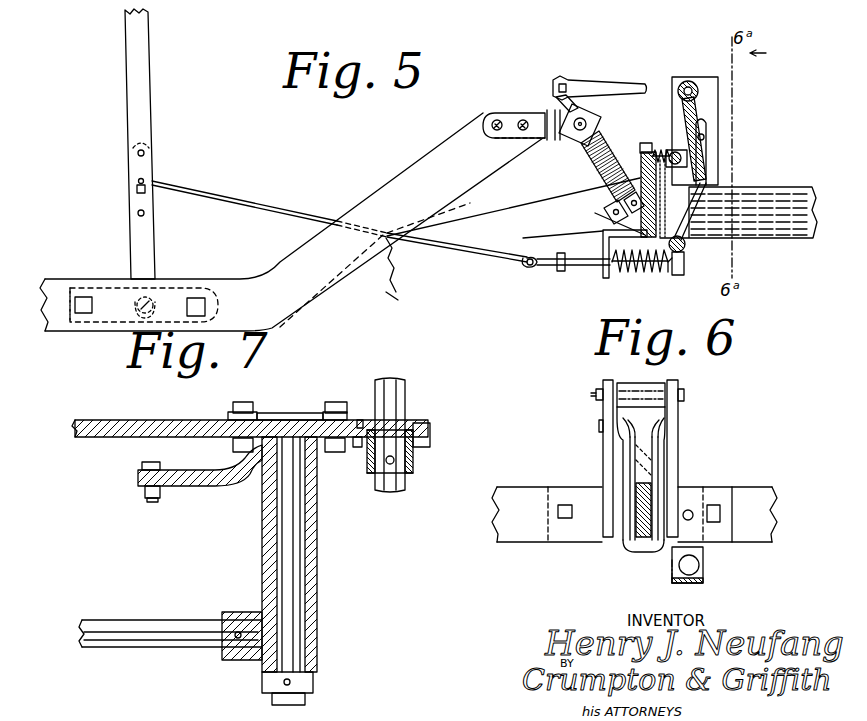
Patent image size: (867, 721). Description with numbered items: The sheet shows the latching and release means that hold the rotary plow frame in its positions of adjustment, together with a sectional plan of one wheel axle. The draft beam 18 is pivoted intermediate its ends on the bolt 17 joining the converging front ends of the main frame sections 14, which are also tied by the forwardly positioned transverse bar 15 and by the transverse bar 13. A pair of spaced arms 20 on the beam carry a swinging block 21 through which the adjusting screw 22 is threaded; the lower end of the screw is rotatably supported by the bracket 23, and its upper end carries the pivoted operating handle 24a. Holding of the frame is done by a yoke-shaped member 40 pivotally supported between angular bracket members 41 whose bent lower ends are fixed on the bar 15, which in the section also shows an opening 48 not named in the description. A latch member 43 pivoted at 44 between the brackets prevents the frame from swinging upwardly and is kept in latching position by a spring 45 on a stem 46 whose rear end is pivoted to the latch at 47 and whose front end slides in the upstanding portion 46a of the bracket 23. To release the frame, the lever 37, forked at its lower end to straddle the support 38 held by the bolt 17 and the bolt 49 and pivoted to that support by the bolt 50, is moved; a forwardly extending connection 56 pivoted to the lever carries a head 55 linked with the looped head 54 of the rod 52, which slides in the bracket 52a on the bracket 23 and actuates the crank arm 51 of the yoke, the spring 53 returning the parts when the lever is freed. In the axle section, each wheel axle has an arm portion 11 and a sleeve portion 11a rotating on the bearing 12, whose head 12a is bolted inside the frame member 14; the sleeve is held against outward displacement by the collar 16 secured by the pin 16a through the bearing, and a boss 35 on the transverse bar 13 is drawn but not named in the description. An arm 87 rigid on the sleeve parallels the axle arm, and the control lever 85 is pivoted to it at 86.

In FIG. 5, the lever 37 is at (152, 105).
In FIG. 5, the draft beam 18 is at (372, 166).
In FIG. 5, the bolt 49 is at (75, 297).
In FIG. 5, the support 38 is at (103, 278).
In FIG. 6, the support 38 is at (640, 533).
In FIG. 5, the bolt 50 is at (158, 292).
In FIG. 5, the bolt 17 is at (205, 300).
In FIG. 5, the forwardly extending connection 56 is at (250, 200).
In FIG. 5, the frame sections 14 is at (410, 285).
In FIG. 7, the frame sections 14 is at (175, 416).
In FIG. 5, the spaced arms 20 is at (535, 140).
In FIG. 5, the adjusting screw 22 is at (556, 142).
In FIG. 5, the operating handle 24a is at (605, 68).
In FIG. 5, the block 21 is at (610, 112).
In FIG. 5, the bracket 23 is at (603, 210).
In FIG. 5, the upstanding portion 46a is at (600, 196).
In FIG. 5, the spring 45 is at (664, 146).
In FIG. 5, the stem 46 is at (640, 148).
In FIG. 5, the pivotal connection 47 is at (656, 194).
In FIG. 5, the pivot 44 is at (693, 80).
In FIG. 5, the latch member 43 is at (688, 113).
In FIG. 6, the latch member 43 is at (660, 413).
In FIG. 5, the yoke-shaped member 40 is at (706, 135).
In FIG. 6, the yoke-shaped member 40 is at (652, 470).
In FIG. 5, the bracket members 41 is at (718, 157).
In FIG. 6, the bracket members 41 is at (603, 452).
In FIG. 5, the collar 16 is at (715, 185).
In FIG. 7, the collar 16 is at (313, 680).
In FIG. 5, the crank arm 51 is at (670, 262).
In FIG. 6, the crank arm 51 is at (682, 570).
In FIG. 5, the spring 53 is at (663, 272).
In FIG. 5, the bracket 52a is at (608, 280).
In FIG. 6, the bracket 52a is at (703, 562).
In FIG. 5, the rod 52 is at (582, 268).
In FIG. 6, the rod 52 is at (623, 550).
In FIG. 5, the looped head 54 is at (558, 272).
In FIG. 5, the head 55 is at (524, 266).
In FIG. 6, the transverse bar 15 is at (520, 480).
In FIG. 7, the transverse bar 15 is at (245, 400).
In FIG. 6, the opening 48 is at (565, 518).
In FIG. 7, the head 12a is at (287, 411).
In FIG. 7, the transverse bar 13 is at (405, 398).
In FIG. 7, the boss 35 is at (413, 464).
In FIG. 7, the bearing 12 is at (300, 530).
In FIG. 7, the sleeve portion 11a is at (318, 568).
In FIG. 7, the arm 87 is at (207, 487).
In FIG. 7, the control lever 85 is at (140, 466).
In FIG. 7, the pivot 86 is at (148, 500).
In FIG. 7, the arm portion 11 is at (156, 619).
In FIG. 7, the pin 16a is at (262, 682).